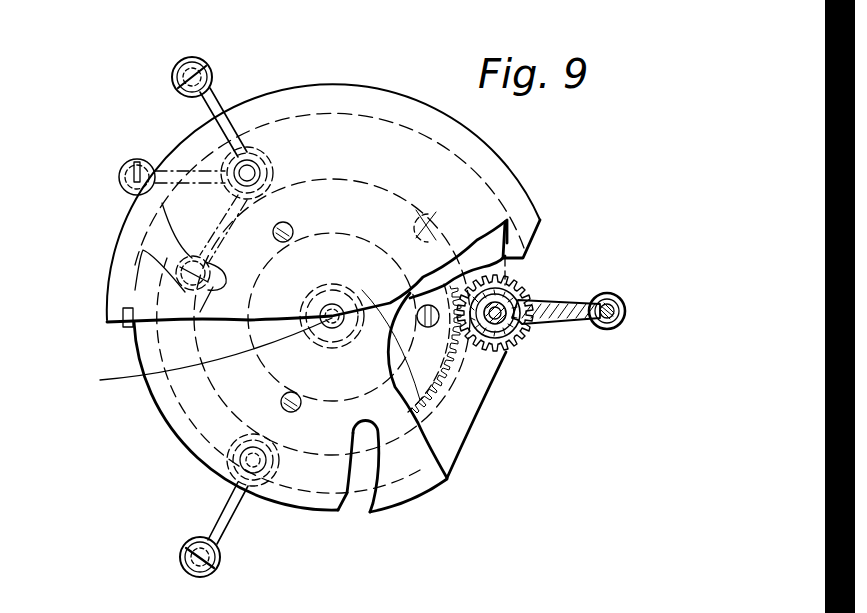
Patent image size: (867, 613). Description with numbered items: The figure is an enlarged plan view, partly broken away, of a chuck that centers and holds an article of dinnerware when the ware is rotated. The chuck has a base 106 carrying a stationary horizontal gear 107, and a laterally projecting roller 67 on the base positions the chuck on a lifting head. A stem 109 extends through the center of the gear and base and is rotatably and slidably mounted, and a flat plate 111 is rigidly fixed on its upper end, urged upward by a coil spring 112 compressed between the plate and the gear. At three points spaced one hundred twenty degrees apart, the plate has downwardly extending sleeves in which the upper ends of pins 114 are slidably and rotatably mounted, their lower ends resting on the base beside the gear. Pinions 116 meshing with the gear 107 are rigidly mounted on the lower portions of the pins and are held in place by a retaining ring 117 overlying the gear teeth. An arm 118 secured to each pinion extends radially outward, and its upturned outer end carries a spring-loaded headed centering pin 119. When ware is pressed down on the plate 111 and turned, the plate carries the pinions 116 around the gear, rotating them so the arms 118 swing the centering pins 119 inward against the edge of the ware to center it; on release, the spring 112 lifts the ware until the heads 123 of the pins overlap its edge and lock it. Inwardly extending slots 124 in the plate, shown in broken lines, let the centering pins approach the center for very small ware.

The laterally projecting roller 67 is at (122, 330).
The base 106 is at (460, 415).
The stationary horizontal gear 107 is at (455, 385).
The stem 109 is at (197, 373).
The flat plate 111 is at (287, 503).
The coil spring 112 is at (205, 401).
The pin 114 is at (515, 340).
The pinion 116 is at (545, 327).
The retaining ring 117 is at (420, 405).
The arm 118 is at (205, 97).
The headed centering pin 119 is at (626, 312).
The head 123 is at (200, 62).
The inwardly extending slot 124 is at (342, 505).